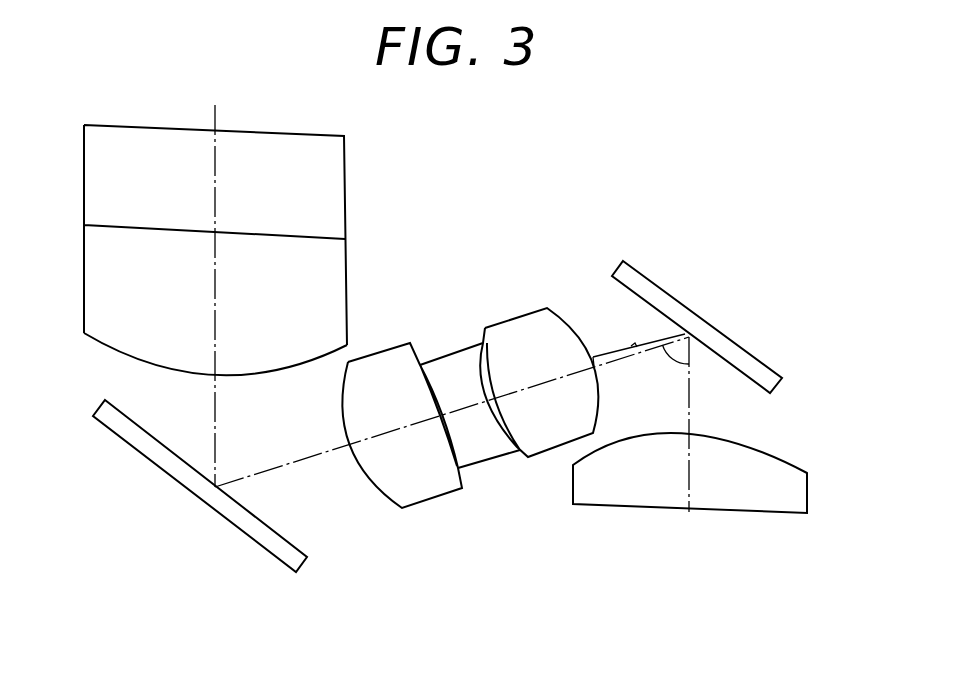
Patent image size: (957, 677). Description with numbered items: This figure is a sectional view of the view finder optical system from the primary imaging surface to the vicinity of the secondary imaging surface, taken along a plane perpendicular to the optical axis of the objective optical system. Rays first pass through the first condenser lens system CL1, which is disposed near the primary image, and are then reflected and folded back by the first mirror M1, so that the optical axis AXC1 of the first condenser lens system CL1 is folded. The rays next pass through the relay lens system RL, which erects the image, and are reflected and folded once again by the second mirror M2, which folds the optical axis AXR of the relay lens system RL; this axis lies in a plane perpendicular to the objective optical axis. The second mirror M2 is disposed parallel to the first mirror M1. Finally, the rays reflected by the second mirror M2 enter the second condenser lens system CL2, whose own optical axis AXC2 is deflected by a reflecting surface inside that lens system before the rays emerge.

The second condenser lens system CL2 is at (345, 199).
The optical axis of second condenser lens system AXC2 is at (217, 325).
The second mirror M2 is at (258, 547).
The relay lens system RL is at (546, 295).
The optical axis of relay lens system AXR is at (568, 368).
The first mirror M1 is at (745, 348).
The optical axis of first condenser lens system AXC1 is at (690, 392).
The first condenser lens system CL1 is at (790, 490).